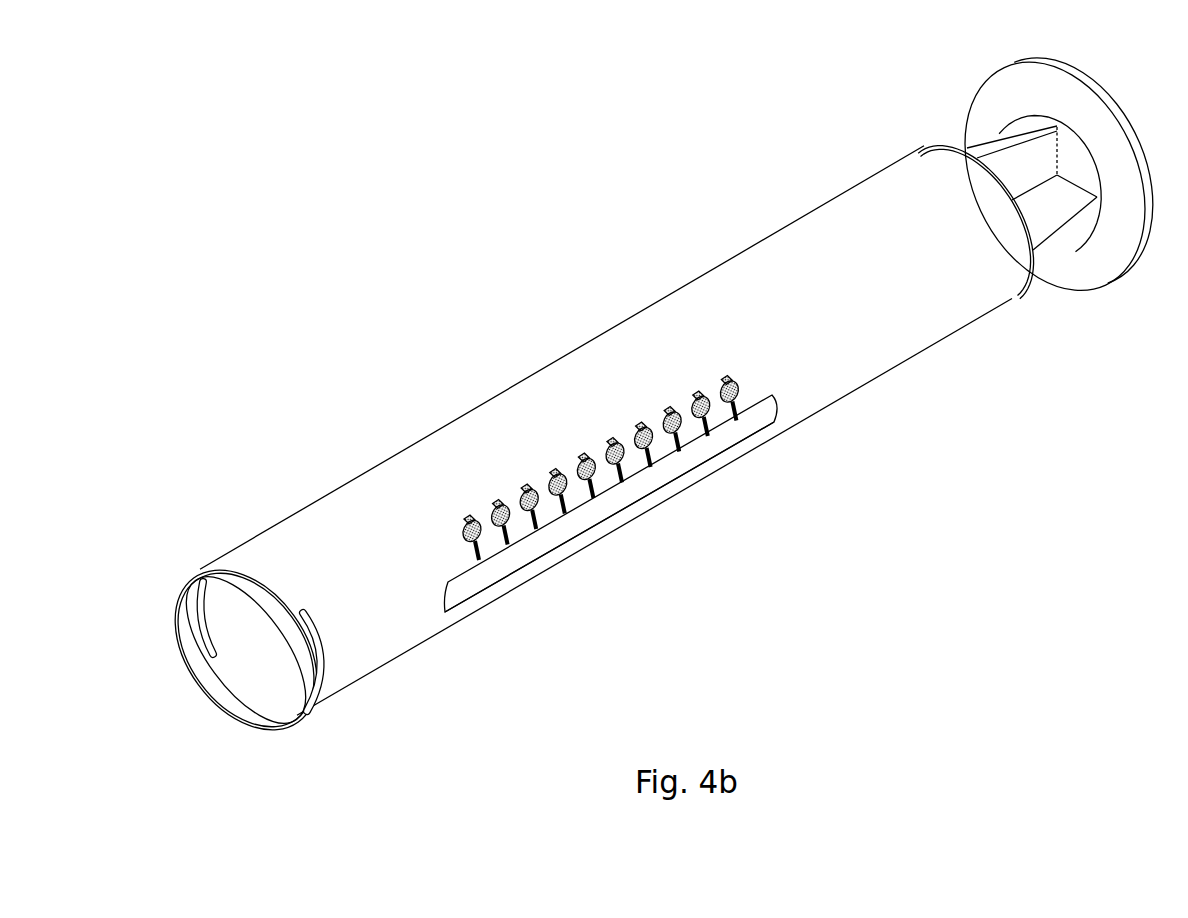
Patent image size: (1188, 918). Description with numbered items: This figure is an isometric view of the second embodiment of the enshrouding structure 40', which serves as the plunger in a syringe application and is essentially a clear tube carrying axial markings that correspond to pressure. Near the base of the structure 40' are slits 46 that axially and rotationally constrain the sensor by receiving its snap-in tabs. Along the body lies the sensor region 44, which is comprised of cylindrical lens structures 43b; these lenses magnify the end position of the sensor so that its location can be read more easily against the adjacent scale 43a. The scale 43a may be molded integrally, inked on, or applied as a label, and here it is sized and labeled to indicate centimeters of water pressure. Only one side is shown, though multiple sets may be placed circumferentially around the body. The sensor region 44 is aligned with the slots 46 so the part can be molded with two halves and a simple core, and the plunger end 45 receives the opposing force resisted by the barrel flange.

The enshrouding structure 40' is at (621, 441).
The scale 43a is at (509, 460).
The cylindrical lens structures 43b is at (717, 442).
The sensor region 44 is at (662, 538).
The end 45 is at (1110, 225).
The slits 46 is at (320, 675).